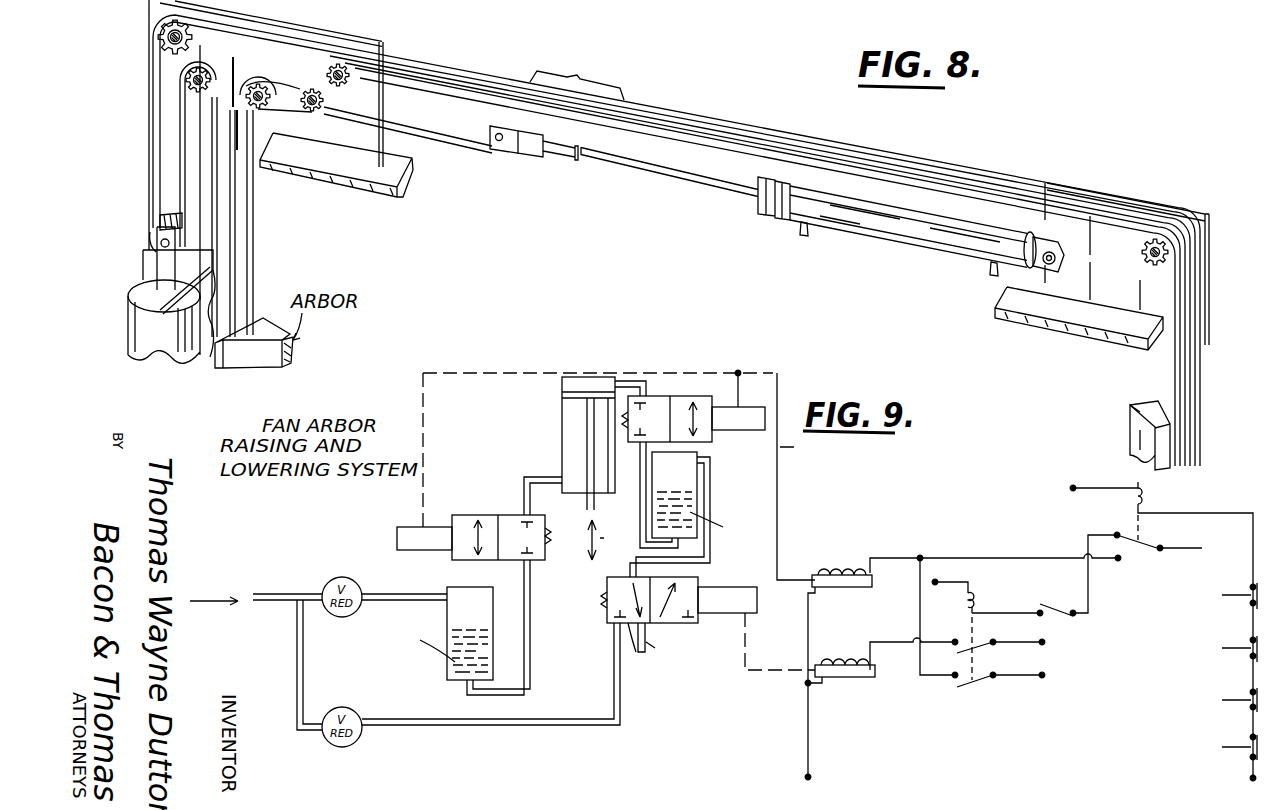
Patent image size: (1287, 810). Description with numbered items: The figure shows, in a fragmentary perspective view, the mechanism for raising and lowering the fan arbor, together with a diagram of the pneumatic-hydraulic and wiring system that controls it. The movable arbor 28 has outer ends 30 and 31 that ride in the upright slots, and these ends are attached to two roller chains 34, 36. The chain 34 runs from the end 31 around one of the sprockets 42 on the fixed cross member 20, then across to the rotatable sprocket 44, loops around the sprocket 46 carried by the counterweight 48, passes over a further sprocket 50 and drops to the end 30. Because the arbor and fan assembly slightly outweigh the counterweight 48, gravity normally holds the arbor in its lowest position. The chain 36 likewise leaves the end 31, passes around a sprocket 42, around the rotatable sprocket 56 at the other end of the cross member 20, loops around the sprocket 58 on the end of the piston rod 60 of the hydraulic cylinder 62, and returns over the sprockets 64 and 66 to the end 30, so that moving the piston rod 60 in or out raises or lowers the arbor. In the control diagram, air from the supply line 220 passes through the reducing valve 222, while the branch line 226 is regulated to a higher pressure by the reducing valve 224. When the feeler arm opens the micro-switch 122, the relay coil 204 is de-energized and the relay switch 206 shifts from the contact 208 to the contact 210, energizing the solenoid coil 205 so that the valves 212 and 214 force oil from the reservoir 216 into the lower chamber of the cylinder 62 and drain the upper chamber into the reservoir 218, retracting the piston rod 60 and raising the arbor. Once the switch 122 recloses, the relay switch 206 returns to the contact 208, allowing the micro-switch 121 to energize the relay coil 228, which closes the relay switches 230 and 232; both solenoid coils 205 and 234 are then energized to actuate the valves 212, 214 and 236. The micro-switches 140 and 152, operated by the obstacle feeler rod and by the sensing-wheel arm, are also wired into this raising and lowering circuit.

In FIG. 8, the fixed cross member 20 is at (378, 193).
In FIG. 8, the arbor 28 is at (309, 347).
In FIG. 8, the arbor end 30 is at (254, 343).
In FIG. 8, the arbor end 31 is at (1116, 395).
In FIG. 8, the roller chain 34 is at (227, 250).
In FIG. 8, the roller chain 36 is at (428, 147).
In FIG. 8, the sprocket 42 is at (1150, 267).
In FIG. 8, the sprocket 44 is at (196, 28).
In FIG. 8, the sprocket 46 is at (157, 222).
In FIG. 8, the counterweight 48 is at (128, 318).
In FIG. 8, the sprocket 50 is at (215, 81).
In FIG. 8, the sprocket 56 is at (337, 67).
In FIG. 8, the sprocket 58 is at (492, 158).
In FIG. 8, the piston rod 60 is at (633, 178).
In FIG. 9, the piston rod 60 is at (587, 455).
In FIG. 8, the hydraulic cylinder 62 is at (866, 240).
In FIG. 9, the hydraulic cylinder 62 is at (562, 427).
In FIG. 8, the sprocket 64 is at (324, 104).
In FIG. 8, the sprocket 66 is at (264, 107).
In FIG. 9, the micro-switch 121 is at (1063, 612).
In FIG. 9, the micro-switch 122 is at (1258, 649).
In FIG. 9, the micro-switch 140 is at (1260, 743).
In FIG. 9, the micro-switch 152 is at (1267, 583).
In FIG. 9, the relay coil 204 is at (1145, 500).
In FIG. 9, the solenoid coil 205 is at (822, 575).
In FIG. 9, the relay switch 206 is at (1135, 550).
In FIG. 9, the contact 208 is at (1115, 536).
In FIG. 9, the contact 210 is at (1118, 560).
In FIG. 9, the valve 212 is at (498, 515).
In FIG. 9, the valve 214 is at (655, 396).
In FIG. 9, the reservoir 216 is at (478, 646).
In FIG. 9, the reservoir 218 is at (690, 482).
In FIG. 9, the air supply line 220 is at (275, 597).
In FIG. 9, the reducing valve 222 is at (345, 577).
In FIG. 9, the reducing valve 224 is at (356, 710).
In FIG. 9, the branch line 226 is at (457, 725).
In FIG. 9, the relay coil 228 is at (980, 600).
In FIG. 9, the relay switch 230 is at (1000, 648).
In FIG. 9, the relay switch 232 is at (980, 684).
In FIG. 9, the solenoid coil 234 is at (870, 677).
In FIG. 9, the valve 236 is at (634, 655).